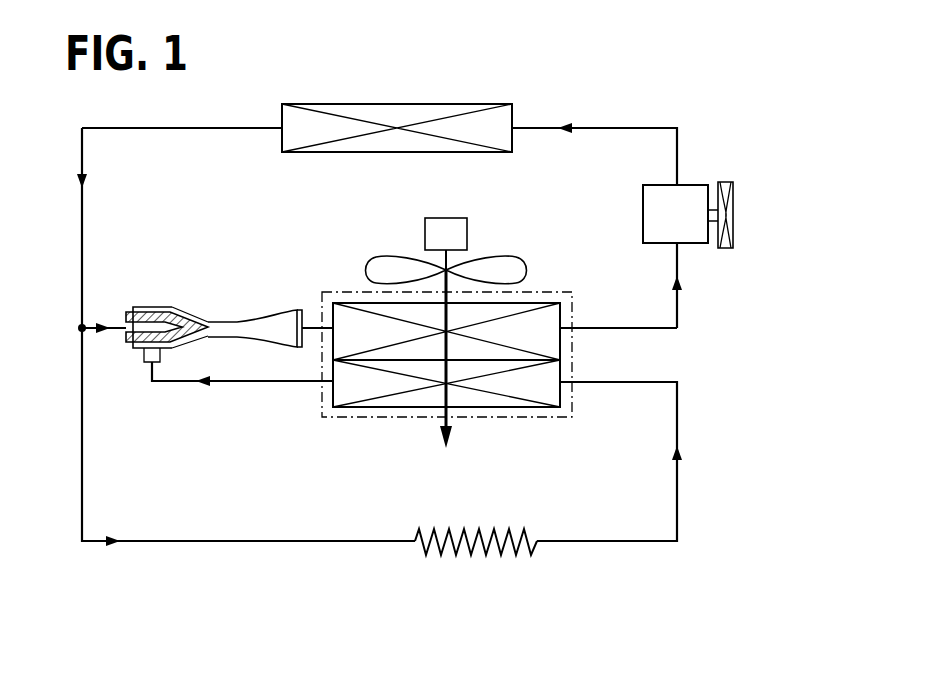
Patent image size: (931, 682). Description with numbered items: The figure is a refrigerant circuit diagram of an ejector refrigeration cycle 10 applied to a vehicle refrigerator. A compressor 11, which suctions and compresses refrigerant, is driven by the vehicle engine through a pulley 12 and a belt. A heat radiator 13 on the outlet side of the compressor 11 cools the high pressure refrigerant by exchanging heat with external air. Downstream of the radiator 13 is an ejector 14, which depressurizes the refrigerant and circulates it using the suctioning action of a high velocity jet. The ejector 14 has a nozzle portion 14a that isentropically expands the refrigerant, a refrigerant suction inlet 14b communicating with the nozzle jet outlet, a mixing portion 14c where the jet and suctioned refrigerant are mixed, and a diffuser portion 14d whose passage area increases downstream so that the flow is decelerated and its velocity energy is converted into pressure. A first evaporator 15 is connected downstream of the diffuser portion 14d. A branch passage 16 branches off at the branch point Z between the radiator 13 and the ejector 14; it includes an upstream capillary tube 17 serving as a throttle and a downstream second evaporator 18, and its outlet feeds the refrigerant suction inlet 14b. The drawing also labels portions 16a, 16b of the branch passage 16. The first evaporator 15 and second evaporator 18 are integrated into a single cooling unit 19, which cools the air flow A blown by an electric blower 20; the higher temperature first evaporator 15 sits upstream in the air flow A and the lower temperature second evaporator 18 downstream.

The ejector refrigeration cycle 10 is at (614, 105).
The compressor 11 is at (695, 184).
The pulley 12 is at (733, 203).
The heat radiator 13 is at (415, 104).
The ejector 14 is at (206, 307).
The nozzle portion 14a is at (170, 307).
The refrigerant suction inlet 14b is at (144, 356).
The mixing portion 14c is at (218, 322).
The diffuser portion 14d is at (287, 320).
The first evaporator 15 is at (538, 322).
The branch passage 16 is at (155, 546).
The branch passage portion 16a is at (258, 543).
The branch passage portion 16b is at (625, 543).
The capillary tube 17 is at (525, 556).
The second evaporator 18 is at (368, 383).
The cooling unit 19 is at (576, 399).
The electric blower 20 is at (512, 258).
The air flow A is at (453, 425).
The branch point Z is at (82, 328).